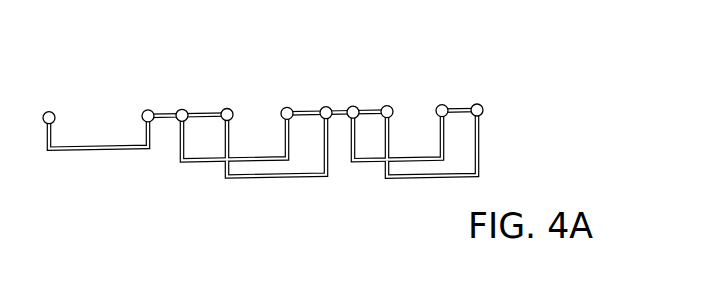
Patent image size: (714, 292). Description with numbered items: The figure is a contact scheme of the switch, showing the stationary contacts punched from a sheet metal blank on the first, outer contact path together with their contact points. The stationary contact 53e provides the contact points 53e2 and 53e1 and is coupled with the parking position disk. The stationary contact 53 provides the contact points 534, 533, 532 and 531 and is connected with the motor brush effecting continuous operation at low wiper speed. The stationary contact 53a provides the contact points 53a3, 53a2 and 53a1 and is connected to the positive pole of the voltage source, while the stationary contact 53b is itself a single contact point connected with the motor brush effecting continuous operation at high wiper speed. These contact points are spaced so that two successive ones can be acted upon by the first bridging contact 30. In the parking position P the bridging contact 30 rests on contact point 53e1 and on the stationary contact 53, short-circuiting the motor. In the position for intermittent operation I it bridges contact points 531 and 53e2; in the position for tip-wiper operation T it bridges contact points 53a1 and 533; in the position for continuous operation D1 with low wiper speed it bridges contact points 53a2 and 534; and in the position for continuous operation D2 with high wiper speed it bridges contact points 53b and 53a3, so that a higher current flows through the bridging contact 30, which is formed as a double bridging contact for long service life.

The stationary contact 53 is at (405, 43).
The stationary contact 53a is at (243, 43).
The stationary contact 53e is at (522, 42).
The stationary contact 53b is at (49, 111).
The contact point 53a1 is at (227, 108).
The contact point 53a2 is at (183, 109).
The contact point 53a3 is at (148, 109).
The contact point 531 is at (387, 105).
The contact point 532 is at (353, 106).
The contact point 533 is at (326, 106).
The contact point 534 is at (287, 107).
The contact point 53e1 is at (438, 105).
The contact point 53e2 is at (478, 104).
The continuous operation with low wiper speed D1 is at (184, 163).
The continuous operation with high wiper speed D2 is at (87, 151).
The tip-wiper operation position T is at (265, 179).
The parking position P is at (415, 157).
The intermittent operation position I is at (428, 178).
The first bridging contact 30 is at (359, 162).